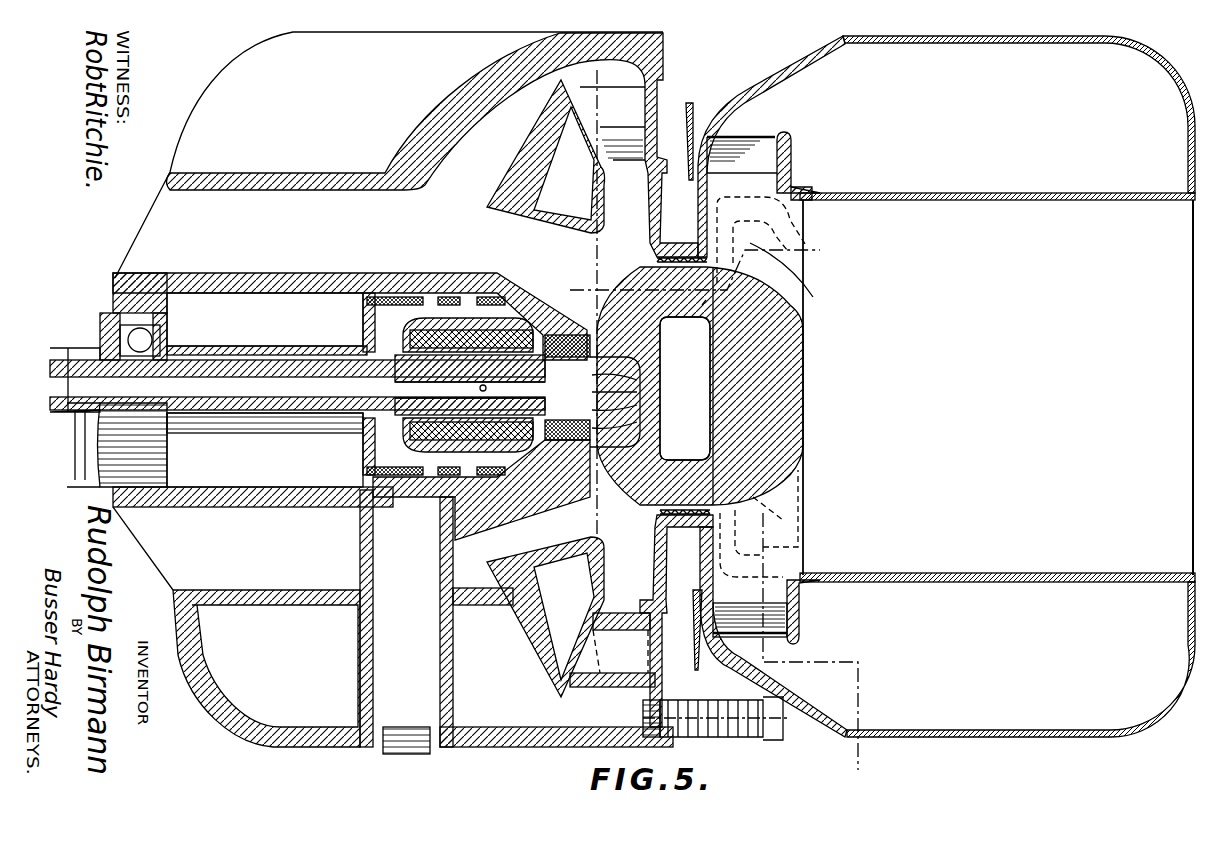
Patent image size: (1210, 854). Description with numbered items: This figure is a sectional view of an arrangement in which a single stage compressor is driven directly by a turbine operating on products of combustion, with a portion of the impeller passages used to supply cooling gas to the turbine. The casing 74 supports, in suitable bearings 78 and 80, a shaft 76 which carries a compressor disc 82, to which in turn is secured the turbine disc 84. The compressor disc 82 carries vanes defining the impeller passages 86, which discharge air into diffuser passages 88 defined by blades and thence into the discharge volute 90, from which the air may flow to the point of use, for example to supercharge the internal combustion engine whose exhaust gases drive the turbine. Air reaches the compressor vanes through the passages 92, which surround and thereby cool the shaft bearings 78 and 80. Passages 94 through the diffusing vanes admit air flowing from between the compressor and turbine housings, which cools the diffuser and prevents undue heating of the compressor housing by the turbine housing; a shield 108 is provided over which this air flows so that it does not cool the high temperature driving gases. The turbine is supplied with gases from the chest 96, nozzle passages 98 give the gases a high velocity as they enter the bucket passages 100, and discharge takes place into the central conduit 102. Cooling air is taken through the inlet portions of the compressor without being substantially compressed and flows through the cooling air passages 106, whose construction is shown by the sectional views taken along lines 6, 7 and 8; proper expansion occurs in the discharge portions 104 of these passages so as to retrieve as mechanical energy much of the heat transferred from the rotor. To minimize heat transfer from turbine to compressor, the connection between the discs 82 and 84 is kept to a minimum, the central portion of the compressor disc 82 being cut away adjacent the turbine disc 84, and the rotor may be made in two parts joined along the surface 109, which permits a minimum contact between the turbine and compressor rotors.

The casing 74 is at (300, 82).
The shaft 76 is at (264, 374).
The bearing 78 is at (138, 332).
The bearing 80 is at (427, 450).
The compressor disc 82 is at (650, 443).
The turbine disc 84 is at (800, 352).
The impeller passages 86 is at (593, 250).
The diffuser passages 88 is at (627, 141).
The discharge volute 90 is at (476, 120).
The air supply passages 92 is at (332, 235).
The cooling passages through diffusing vanes 94 is at (620, 650).
The gas chest 96 is at (923, 107).
The nozzle passages 98 is at (752, 140).
The bucket passages 100 is at (790, 293).
The central conduit 102 is at (1010, 323).
The discharge portions of cooling air passages 104 is at (798, 186).
The cooling air passages 106 is at (643, 287).
The shield 108 is at (693, 110).
The joining surface 109 is at (702, 303).
The section line 6- 6 is at (597, 290).
The section line 7- 7 is at (815, 404).
The section line 8- 8 is at (619, 67).